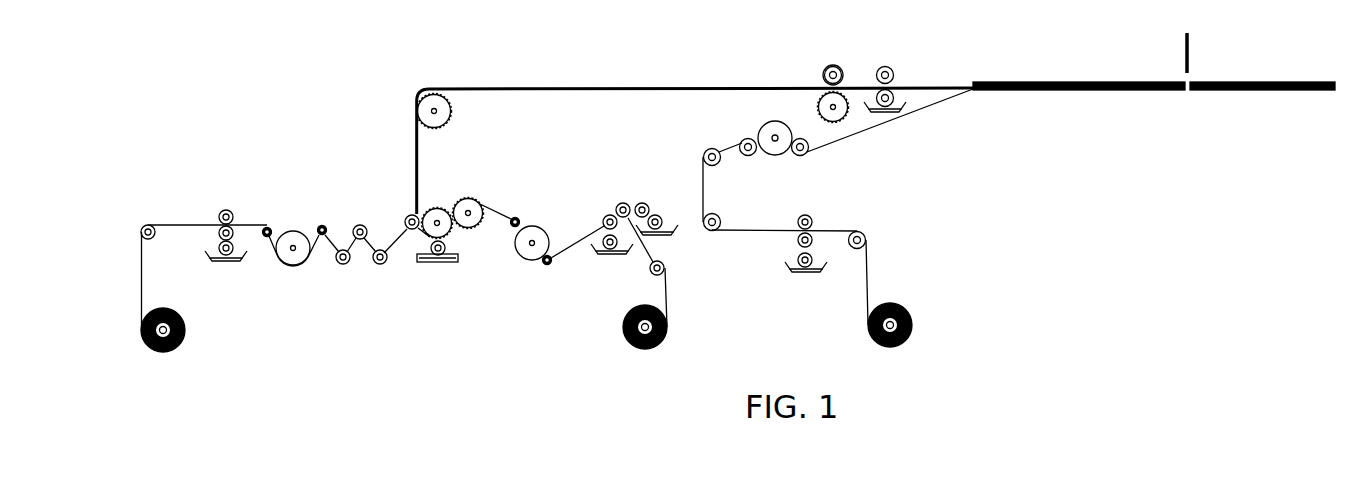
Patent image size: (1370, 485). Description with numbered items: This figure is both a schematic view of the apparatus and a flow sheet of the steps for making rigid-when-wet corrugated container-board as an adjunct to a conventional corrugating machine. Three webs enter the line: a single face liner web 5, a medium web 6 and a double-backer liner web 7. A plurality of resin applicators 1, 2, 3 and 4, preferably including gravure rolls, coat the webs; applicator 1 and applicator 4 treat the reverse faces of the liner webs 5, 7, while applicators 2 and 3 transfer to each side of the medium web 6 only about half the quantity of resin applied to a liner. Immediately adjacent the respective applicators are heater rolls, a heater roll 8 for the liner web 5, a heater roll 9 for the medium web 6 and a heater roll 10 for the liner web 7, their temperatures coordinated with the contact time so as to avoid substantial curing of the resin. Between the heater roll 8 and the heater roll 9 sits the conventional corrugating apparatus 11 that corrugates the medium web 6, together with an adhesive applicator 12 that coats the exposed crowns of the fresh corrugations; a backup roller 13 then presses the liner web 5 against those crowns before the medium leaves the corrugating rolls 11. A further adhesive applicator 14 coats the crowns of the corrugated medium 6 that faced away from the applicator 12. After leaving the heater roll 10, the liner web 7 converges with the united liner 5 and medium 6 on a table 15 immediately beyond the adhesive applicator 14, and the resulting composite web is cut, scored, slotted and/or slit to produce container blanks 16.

The resin applicator 1 is at (227, 263).
The resin applicator 2 is at (603, 257).
The resin applicator 3 is at (663, 236).
The resin applicator 4 is at (795, 275).
The liner web 5 is at (143, 292).
The medium web 6 is at (563, 92).
The liner web 7 is at (870, 290).
The heater roll 8 is at (403, 268).
The heater roll 9 is at (527, 262).
The heater roll 10 is at (775, 157).
The corrugating apparatus 11 is at (463, 228).
The adhesive applicator 12 is at (427, 262).
The backup roller 13 is at (407, 220).
The adhesive applicator 14 is at (897, 113).
The table 15 is at (1077, 91).
The container blanks 16 is at (1283, 82).